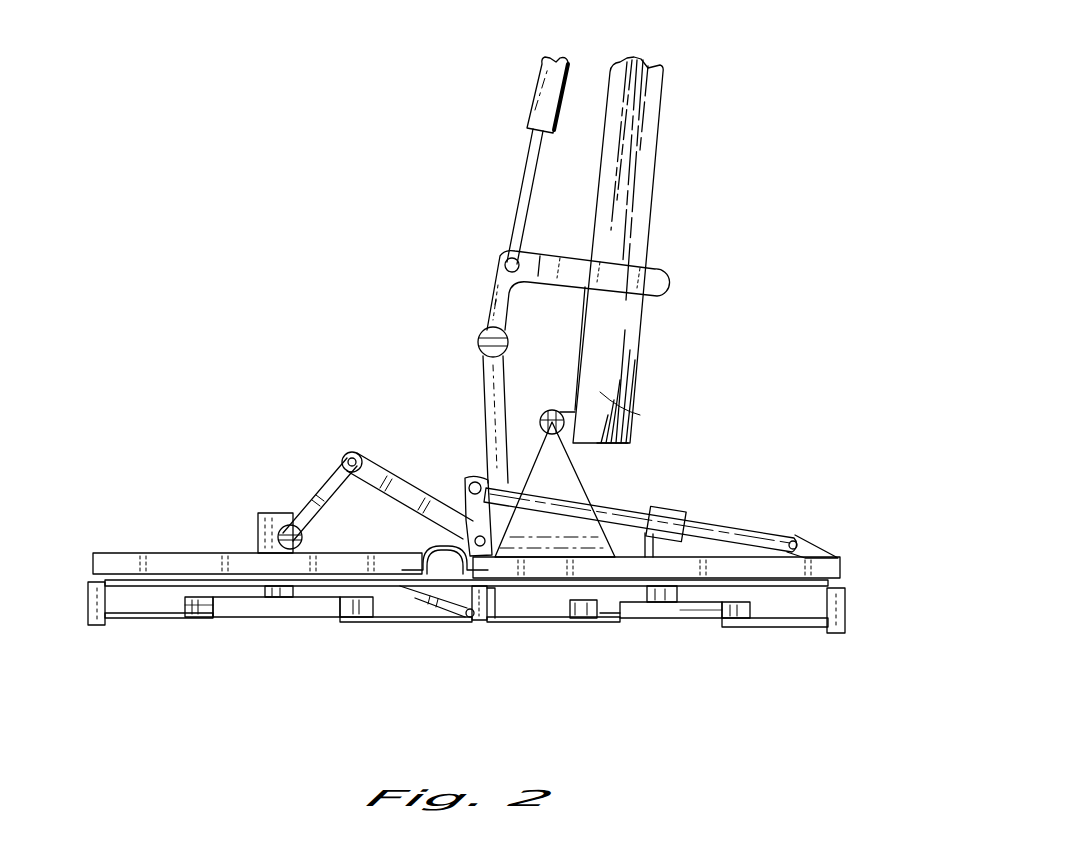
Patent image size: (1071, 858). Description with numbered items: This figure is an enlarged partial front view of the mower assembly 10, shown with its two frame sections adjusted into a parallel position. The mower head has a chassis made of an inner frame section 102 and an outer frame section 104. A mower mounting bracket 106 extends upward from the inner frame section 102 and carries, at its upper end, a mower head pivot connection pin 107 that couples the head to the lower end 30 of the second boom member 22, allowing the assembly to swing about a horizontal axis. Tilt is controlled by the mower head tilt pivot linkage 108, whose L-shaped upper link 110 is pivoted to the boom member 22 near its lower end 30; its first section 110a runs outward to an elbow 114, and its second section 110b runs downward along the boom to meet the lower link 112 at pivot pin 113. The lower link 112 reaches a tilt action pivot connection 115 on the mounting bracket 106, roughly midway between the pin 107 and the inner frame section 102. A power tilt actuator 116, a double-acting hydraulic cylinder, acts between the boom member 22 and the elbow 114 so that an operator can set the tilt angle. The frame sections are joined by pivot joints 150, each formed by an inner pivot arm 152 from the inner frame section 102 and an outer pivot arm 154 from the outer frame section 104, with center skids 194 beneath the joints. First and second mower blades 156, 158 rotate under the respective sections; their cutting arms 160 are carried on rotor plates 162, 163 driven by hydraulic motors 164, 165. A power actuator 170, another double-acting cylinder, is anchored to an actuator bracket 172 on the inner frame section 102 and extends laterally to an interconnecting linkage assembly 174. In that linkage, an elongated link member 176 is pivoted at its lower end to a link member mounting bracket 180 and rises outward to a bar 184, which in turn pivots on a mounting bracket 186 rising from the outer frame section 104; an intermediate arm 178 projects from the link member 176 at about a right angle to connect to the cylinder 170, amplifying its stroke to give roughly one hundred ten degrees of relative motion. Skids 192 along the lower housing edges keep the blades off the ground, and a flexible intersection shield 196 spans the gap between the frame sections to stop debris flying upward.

The mower assembly 10 is at (700, 466).
The second boom member 22 is at (655, 155).
The lower end 30 is at (602, 398).
The inner frame section 102 is at (832, 570).
The outer frame section 104 is at (113, 562).
The mower mounting bracket 106 is at (575, 495).
The mower head pivot connection pin 107 is at (568, 402).
The mower head tilt pivot linkage 108 is at (492, 284).
The upper link 110 is at (665, 277).
The first section of upper link 110a is at (570, 262).
The second section of upper link 110b is at (500, 296).
The lower link 112 is at (490, 378).
The pivot pin 113 is at (478, 338).
The elbow 114 is at (505, 258).
The tilt action pivot connection 115 is at (545, 410).
The power tilt actuator 116 is at (543, 92).
The pivot joint 150 is at (457, 622).
The inner pivot arm 152 is at (490, 596).
The outer pivot arm 154 is at (405, 612).
The first mower blade 156 is at (694, 621).
The second mower blade 158 is at (292, 617).
The cutting arms 160 is at (153, 617).
The first rotor plate 162 is at (640, 620).
The second rotor plate 163 is at (232, 615).
The hydraulic motor 164 is at (665, 548).
The hydraulic motor 165 is at (273, 533).
The power actuator 170 is at (743, 530).
The actuator bracket 172 is at (813, 550).
The interconnecting linkage assembly 174 is at (347, 450).
The link member 176 is at (392, 470).
The intermediate arm 178 is at (467, 505).
The link member mounting bracket 180 is at (493, 533).
The outer section link 184 is at (328, 490).
The mounting bracket 186 is at (287, 516).
The skids 192 is at (88, 607).
The center skids 194 is at (476, 625).
The flexible intersection shield 196 is at (428, 558).